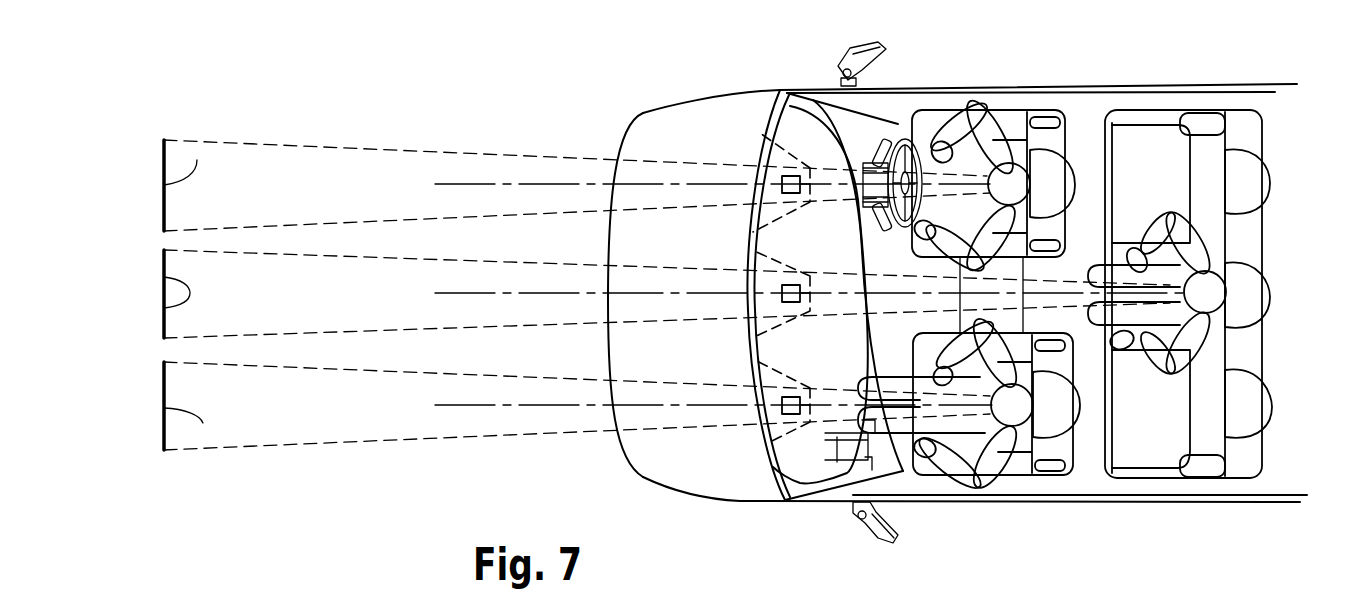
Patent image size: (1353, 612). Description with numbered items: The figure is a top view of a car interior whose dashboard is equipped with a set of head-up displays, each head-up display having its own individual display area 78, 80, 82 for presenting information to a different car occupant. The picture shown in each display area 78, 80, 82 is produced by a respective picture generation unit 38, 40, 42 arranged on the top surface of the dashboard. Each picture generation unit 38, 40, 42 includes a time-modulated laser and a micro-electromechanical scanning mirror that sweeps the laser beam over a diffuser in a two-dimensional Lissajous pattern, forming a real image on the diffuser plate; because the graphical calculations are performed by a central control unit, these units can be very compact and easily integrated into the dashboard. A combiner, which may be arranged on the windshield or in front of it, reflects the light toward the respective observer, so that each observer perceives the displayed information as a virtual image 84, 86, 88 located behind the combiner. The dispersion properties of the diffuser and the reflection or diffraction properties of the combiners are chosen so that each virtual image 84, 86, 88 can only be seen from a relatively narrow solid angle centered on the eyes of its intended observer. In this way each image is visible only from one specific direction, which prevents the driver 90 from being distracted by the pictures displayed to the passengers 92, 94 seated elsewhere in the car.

The picture generation unit 38 is at (792, 414).
The picture generation unit 40 is at (782, 294).
The picture generation unit 42 is at (789, 176).
The display area 78 is at (778, 412).
The display area 80 is at (772, 287).
The display area 82 is at (778, 175).
The virtual image 84 is at (203, 423).
The virtual image 86 is at (165, 307).
The virtual image 88 is at (197, 160).
The driver 90 is at (1030, 410).
The passenger 92 is at (1213, 292).
The passenger 94 is at (1007, 178).